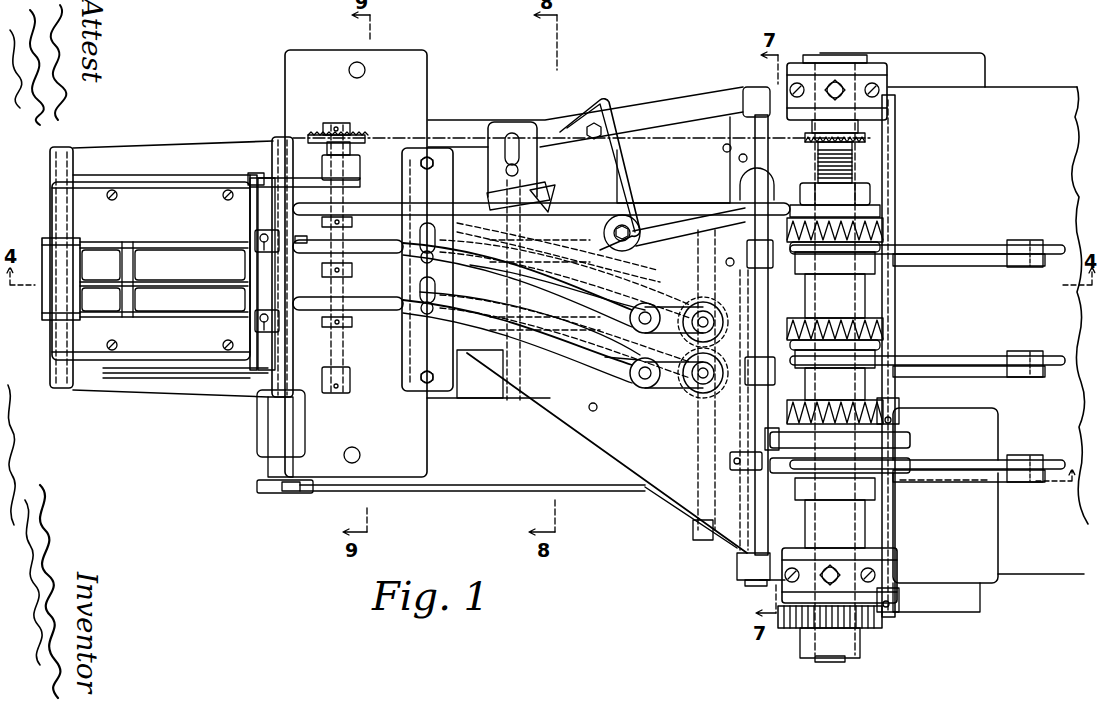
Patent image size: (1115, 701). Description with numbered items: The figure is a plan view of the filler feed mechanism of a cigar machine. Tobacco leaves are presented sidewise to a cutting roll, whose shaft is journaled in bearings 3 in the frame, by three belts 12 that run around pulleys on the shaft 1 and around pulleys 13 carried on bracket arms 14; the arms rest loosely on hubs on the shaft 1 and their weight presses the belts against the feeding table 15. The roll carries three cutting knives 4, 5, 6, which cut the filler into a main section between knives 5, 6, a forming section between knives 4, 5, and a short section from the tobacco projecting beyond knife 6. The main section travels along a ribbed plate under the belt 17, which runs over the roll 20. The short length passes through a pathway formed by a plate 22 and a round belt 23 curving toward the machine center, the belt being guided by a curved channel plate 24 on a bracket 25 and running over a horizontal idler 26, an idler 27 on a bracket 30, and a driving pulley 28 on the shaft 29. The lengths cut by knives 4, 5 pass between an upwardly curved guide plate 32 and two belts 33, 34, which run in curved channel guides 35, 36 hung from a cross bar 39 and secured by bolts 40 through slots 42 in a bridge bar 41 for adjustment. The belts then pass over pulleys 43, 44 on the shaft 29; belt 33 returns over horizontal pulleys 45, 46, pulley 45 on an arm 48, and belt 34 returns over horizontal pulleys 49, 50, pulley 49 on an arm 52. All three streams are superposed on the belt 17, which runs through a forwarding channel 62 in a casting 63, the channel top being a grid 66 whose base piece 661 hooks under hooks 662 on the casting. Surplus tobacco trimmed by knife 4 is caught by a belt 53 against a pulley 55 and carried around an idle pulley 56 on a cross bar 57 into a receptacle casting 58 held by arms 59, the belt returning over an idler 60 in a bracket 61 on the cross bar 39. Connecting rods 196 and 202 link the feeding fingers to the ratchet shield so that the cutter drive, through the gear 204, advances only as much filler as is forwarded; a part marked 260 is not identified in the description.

The shaft 1 is at (835, 362).
The bearings 3 is at (796, 64).
The cutting knife 4 is at (878, 410).
The cutting knife 5 is at (884, 331).
The cutting knife 6 is at (884, 229).
The belts 12 is at (953, 252).
The pulleys 13 is at (1018, 244).
The bracket arms 14 is at (1005, 268).
The feeding table 15 is at (954, 313).
The belt 17 is at (45, 318).
The roll 20 is at (47, 322).
The plate 22 is at (587, 176).
The round belt 23 is at (878, 210).
The curved channel plate 24 is at (648, 226).
The bracket 25 is at (600, 175).
The horizontal idler 26 is at (420, 222).
The idler 27 is at (540, 207).
The driving pulley 28 is at (300, 197).
The shaft 29 is at (345, 132).
The bracket 30 is at (500, 130).
The guide plate 32 is at (607, 453).
The belt 33 is at (545, 340).
The belt 34 is at (539, 285).
The curved channel guide 35 is at (607, 365).
The curved channel guide 36 is at (632, 292).
The cross bar 39 is at (762, 160).
The bolts 40 is at (440, 258).
The bridge bar 41 is at (428, 270).
The slots 42 is at (436, 238).
The pulley 43 is at (378, 313).
The pulley 44 is at (378, 256).
The horizontal pulley 45 is at (634, 385).
The horizontal pulley 46 is at (695, 392).
The arm 48 is at (660, 388).
The horizontal pulley 49 is at (614, 312).
The horizontal pulley 50 is at (707, 305).
The arm 52 is at (652, 317).
The belt 53 is at (840, 451).
The pulley 55 is at (792, 462).
The idle pulley 56 is at (903, 431).
The cross bar 57 is at (890, 514).
The casting 58 is at (945, 542).
The arms 59 is at (918, 408).
The idler 60 is at (765, 443).
The bracket 61 is at (757, 471).
The forwarding channel 62 is at (141, 248).
The casting 63 is at (173, 269).
The grid 66 is at (152, 290).
The connecting rod 196 is at (605, 488).
The connecting rod 202 is at (185, 370).
The gear 204 is at (876, 626).
The fitting 260 is at (282, 493).
The base piece 661 is at (250, 222).
The hooks 662 is at (256, 176).